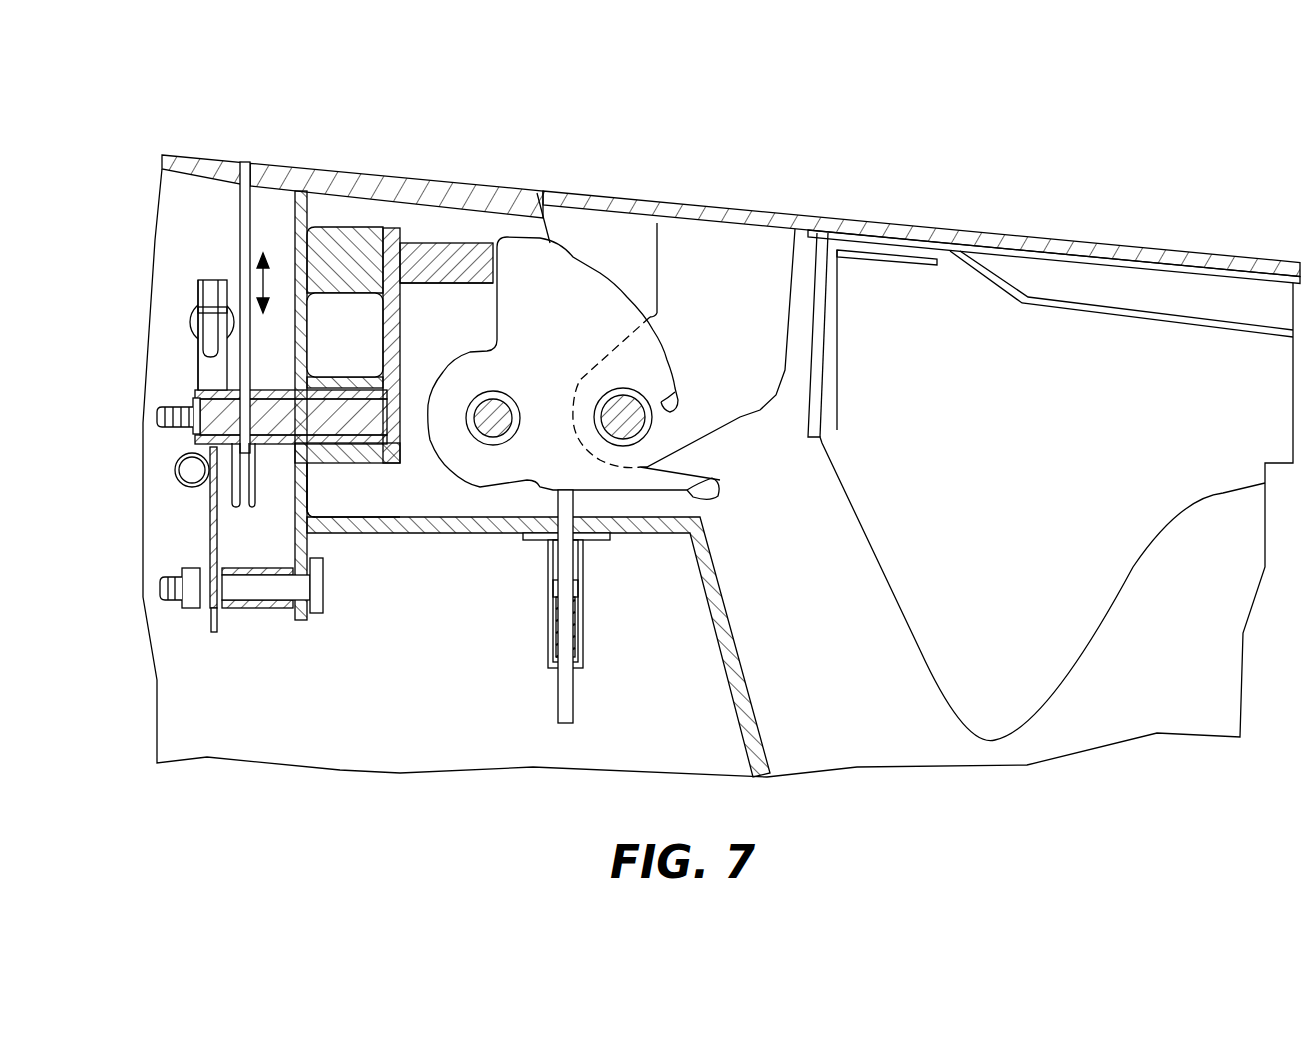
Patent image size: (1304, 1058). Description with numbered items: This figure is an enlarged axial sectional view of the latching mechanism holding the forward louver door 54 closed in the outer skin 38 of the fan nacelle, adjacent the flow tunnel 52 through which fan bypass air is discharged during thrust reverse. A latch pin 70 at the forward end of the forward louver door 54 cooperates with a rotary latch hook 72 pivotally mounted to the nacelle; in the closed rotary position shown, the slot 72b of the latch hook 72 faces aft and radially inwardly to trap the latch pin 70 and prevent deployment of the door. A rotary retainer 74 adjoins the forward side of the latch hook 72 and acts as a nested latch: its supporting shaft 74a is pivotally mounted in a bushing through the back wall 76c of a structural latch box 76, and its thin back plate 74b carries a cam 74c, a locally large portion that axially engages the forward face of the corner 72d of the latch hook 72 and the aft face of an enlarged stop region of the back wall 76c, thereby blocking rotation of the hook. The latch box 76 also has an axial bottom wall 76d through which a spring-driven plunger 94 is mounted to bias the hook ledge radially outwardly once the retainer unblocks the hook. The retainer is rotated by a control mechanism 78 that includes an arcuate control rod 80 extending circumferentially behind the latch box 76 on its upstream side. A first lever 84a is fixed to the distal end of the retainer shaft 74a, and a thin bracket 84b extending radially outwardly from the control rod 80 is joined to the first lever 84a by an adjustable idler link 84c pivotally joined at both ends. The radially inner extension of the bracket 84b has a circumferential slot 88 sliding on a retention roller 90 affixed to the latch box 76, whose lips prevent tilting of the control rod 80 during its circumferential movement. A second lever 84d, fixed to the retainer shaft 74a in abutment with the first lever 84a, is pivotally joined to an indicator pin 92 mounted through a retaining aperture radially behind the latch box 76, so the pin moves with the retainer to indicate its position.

The outer skin 38 is at (198, 153).
The flow tunnel 52 is at (820, 652).
The forward louver door 54 is at (1090, 241).
The latch pin 70 is at (655, 418).
The rotary latch hook 72 is at (494, 500).
The slot 72b is at (672, 408).
The corner 72d is at (493, 292).
The rotary retainer 74 is at (296, 451).
The supporting shaft 74a is at (338, 420).
The back plate 74b is at (400, 340).
The cam 74c is at (452, 240).
The latch box 76 is at (725, 521).
The back wall 76c is at (310, 343).
The bottom wall 76d is at (347, 537).
The control mechanism 78 is at (149, 419).
The control rod 80 is at (175, 478).
The first lever 84a is at (197, 373).
The bracket 84b is at (210, 525).
The idler link 84c is at (198, 320).
The second lever 84d is at (265, 477).
The circumferential slot 88 is at (213, 630).
The retention roller 90 is at (258, 587).
The indicator pin 92 is at (242, 162).
The spring-driven plunger 94 is at (577, 697).